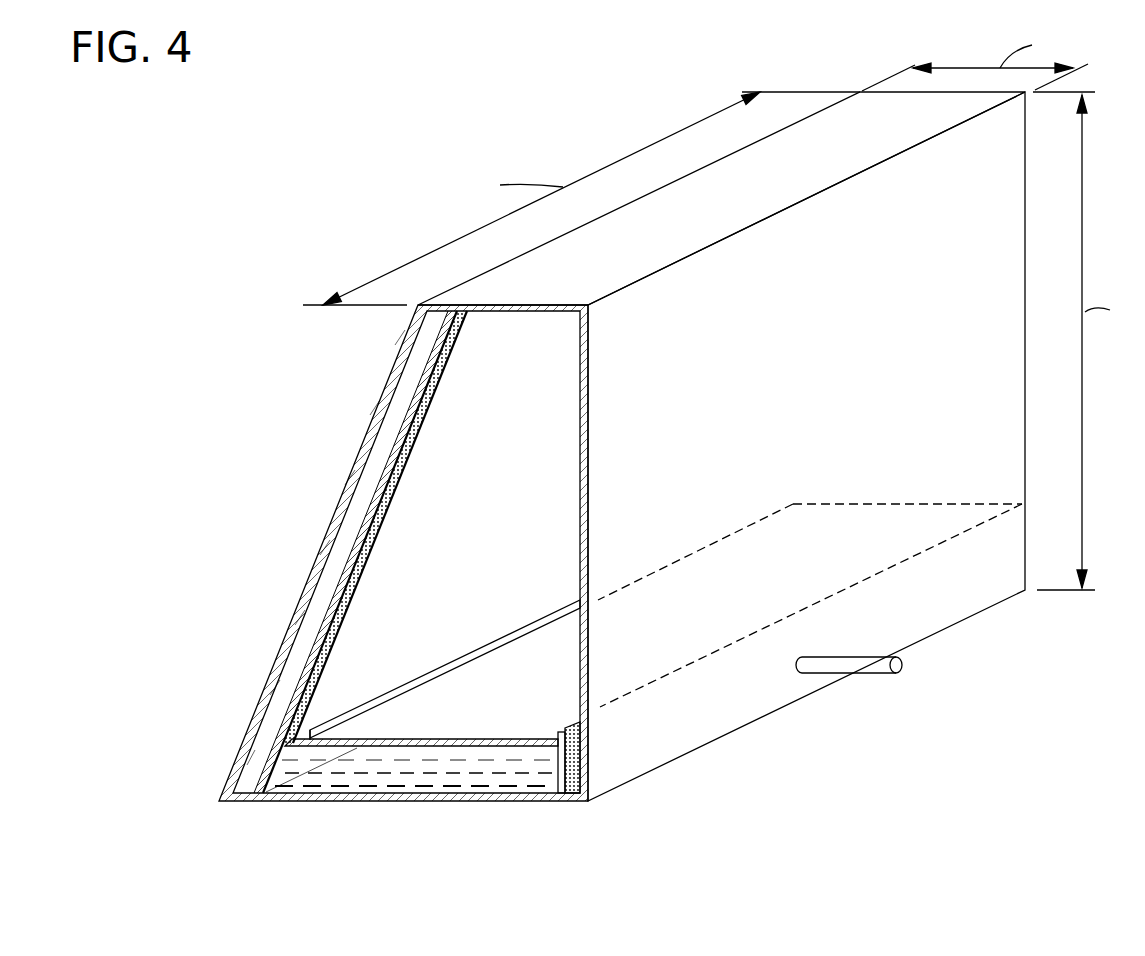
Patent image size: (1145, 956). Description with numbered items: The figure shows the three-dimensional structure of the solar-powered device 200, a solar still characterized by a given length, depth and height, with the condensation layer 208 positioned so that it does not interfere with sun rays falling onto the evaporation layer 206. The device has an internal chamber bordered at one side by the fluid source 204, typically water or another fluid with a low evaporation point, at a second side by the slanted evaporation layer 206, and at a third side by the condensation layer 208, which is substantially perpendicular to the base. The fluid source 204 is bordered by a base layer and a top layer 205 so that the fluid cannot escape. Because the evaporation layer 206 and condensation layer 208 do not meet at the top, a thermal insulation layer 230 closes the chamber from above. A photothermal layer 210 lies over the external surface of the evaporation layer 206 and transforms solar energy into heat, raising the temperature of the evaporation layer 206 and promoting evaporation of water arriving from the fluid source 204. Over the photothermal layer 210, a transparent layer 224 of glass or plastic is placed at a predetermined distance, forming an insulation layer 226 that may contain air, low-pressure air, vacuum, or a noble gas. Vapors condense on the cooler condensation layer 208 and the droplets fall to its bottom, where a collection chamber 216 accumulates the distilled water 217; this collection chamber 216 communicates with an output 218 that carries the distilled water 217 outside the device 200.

The solar-powered device 200 is at (540, 108).
The thermal insulation layer 230 is at (750, 210).
The condensation layer 208 is at (816, 428).
The transparent layer 224 is at (318, 555).
The insulation layer 226 is at (298, 657).
The photothermal layer 210 is at (402, 443).
The evaporation layer 206 is at (393, 500).
The base layer and top layer 205 is at (413, 737).
The fluid source 204 is at (443, 778).
The distilled water 217 is at (573, 768).
The collection chamber 216 is at (575, 748).
The output 218 is at (880, 668).